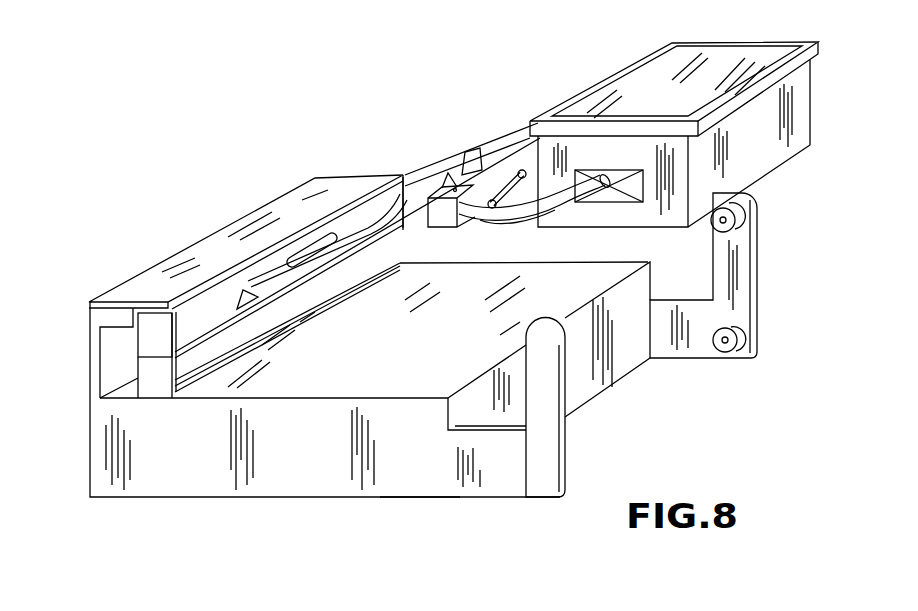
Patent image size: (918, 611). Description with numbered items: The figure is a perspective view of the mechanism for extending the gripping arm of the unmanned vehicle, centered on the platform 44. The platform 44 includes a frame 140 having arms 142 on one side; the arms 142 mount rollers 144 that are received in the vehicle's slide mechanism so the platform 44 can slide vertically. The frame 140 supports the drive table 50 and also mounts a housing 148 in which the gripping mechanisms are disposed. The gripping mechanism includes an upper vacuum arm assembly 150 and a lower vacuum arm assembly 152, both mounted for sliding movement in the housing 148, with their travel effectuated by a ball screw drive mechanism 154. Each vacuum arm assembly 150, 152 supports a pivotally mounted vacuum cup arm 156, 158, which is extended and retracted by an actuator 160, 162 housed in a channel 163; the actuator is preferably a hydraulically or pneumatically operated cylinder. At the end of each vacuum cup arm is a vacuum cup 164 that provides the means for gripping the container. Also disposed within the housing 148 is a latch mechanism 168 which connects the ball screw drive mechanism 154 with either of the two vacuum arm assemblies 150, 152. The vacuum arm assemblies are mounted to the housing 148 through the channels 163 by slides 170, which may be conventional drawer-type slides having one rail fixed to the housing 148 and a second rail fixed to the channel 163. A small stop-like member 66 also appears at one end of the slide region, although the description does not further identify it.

The platform 44 is at (420, 506).
The drive table 50 is at (448, 339).
The stop member 66 is at (244, 300).
The frame 140 is at (250, 498).
The arms 142 is at (555, 441).
The rollers 144 is at (735, 220).
The housing 148 is at (170, 243).
The upper vacuum arm assembly 150 is at (265, 256).
The lower vacuum arm assembly 152 is at (505, 219).
The ball screw drive mechanism 154 is at (422, 173).
The vacuum cup arm 156 is at (552, 205).
The vacuum cup arm 158 is at (312, 270).
The actuator 160 is at (519, 168).
The actuator 162 is at (315, 250).
The channel 163 is at (156, 328).
The vacuum cup 164 is at (617, 170).
The latch mechanism 168 is at (466, 157).
The slide 170 is at (195, 377).